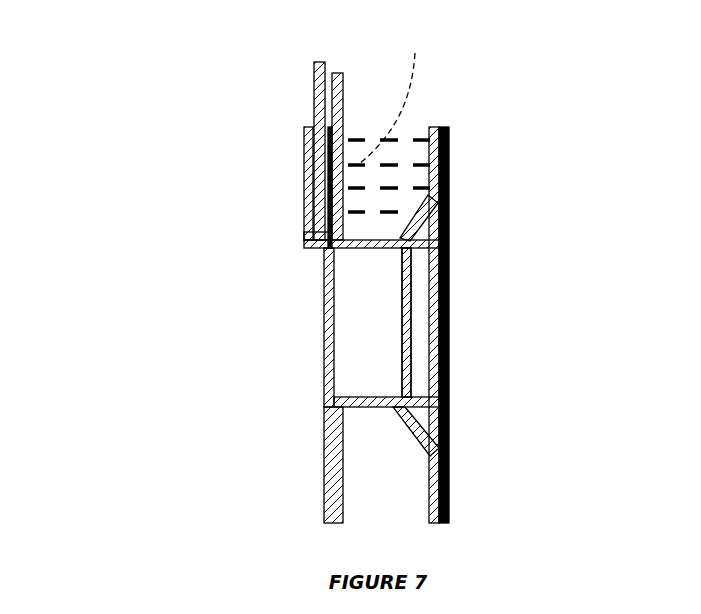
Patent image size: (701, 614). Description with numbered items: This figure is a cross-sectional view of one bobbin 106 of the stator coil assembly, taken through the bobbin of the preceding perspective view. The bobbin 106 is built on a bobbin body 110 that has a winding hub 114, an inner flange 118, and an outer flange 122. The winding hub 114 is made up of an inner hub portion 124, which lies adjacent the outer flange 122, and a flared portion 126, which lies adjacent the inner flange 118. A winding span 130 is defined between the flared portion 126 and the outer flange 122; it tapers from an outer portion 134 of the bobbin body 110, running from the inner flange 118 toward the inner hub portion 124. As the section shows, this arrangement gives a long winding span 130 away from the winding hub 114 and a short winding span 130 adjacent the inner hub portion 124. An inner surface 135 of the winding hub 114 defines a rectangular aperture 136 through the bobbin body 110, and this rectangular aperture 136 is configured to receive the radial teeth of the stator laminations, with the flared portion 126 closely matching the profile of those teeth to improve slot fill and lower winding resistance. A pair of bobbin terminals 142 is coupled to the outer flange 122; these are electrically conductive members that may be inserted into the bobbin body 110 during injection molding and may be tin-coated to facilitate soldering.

The bobbin 106 is at (122, 127).
The bobbin terminals 142 is at (315, 97).
The bobbin body 110 is at (456, 170).
The outer portion 134 is at (435, 127).
The winding span 130 is at (396, 98).
The inner flange 118 is at (437, 199).
The flared portion 126 is at (420, 221).
The inner surface 135 is at (367, 248).
The rectangular aperture 136 is at (406, 322).
The inner hub portion 124 is at (330, 245).
The winding hub 114 is at (373, 398).
The outer flange 122 is at (333, 452).